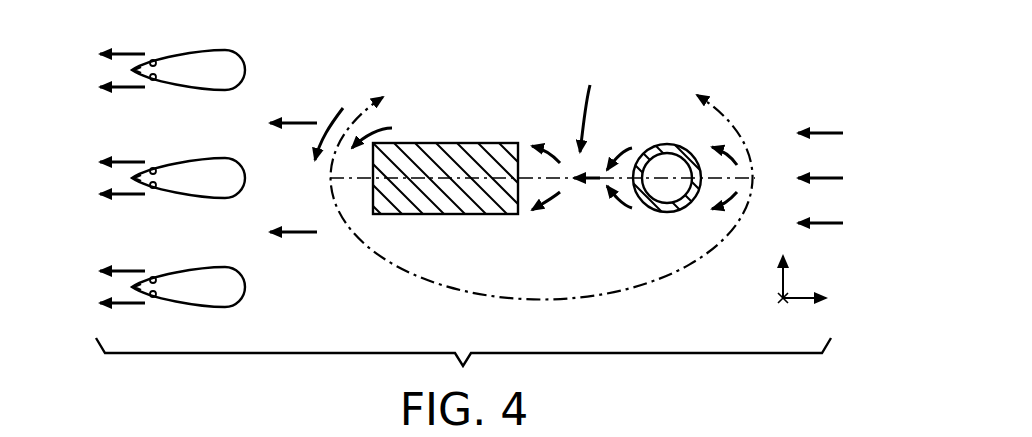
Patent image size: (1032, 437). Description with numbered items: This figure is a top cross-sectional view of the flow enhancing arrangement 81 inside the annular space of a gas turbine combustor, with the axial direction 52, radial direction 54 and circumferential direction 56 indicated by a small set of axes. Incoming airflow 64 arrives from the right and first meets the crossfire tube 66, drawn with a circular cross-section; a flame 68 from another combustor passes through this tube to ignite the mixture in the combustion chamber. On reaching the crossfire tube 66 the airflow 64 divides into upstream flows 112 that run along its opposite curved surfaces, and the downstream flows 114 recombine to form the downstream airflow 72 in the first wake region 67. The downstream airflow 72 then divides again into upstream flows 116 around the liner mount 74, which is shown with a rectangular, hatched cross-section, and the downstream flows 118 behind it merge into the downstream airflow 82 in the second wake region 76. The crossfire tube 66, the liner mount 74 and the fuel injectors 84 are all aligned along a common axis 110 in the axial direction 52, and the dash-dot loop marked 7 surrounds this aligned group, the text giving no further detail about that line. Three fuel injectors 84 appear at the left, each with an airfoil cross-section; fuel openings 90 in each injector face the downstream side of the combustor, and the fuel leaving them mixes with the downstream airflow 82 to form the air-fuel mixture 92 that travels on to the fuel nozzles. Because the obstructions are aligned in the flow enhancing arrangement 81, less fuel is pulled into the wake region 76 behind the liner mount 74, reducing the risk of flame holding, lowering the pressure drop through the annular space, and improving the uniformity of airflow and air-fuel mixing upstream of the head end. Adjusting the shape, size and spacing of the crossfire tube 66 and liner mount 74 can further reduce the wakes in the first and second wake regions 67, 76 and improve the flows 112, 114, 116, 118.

The recirculation flow boundary 7 is at (542, 183).
The axial direction 52 is at (800, 298).
The radial direction 54 is at (786, 302).
The circumferential direction 56 is at (782, 297).
The airflow 64 is at (824, 133).
The crossfire tube 66 is at (660, 212).
The first wake region 67 is at (596, 104).
The flame 68 is at (670, 166).
The downstream airflow 72 is at (592, 185).
The liner mount 74 is at (446, 214).
The second wake region 76 is at (338, 121).
The flow enhancing arrangement 81 is at (645, 58).
The downstream airflow 82 is at (296, 122).
The fuel injector 84 is at (217, 48).
The fuel opening 90 is at (158, 61).
The air-fuel mixture 92 is at (125, 90).
The axis 110 is at (340, 182).
The upstream flows 112 is at (727, 198).
The downstream flows 114 is at (630, 150).
The upstream flows 116 is at (560, 162).
The downstream flows 118 is at (371, 124).